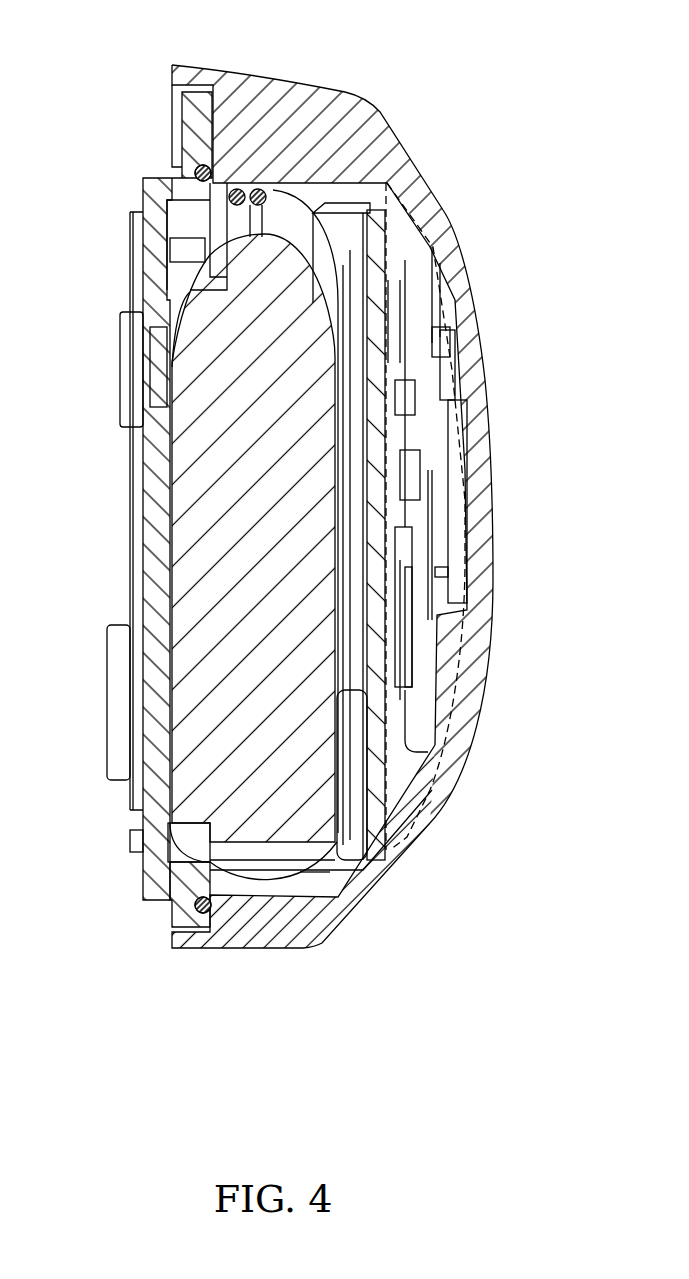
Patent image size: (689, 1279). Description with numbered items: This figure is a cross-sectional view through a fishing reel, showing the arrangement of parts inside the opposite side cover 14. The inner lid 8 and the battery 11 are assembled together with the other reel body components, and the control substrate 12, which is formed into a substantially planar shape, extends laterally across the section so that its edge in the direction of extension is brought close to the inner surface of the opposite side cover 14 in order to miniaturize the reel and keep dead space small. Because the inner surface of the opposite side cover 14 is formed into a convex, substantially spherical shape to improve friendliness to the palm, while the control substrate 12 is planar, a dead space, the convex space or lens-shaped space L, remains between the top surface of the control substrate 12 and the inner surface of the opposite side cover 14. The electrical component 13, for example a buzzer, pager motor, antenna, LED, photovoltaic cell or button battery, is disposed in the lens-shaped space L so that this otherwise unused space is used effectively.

The inner lid 8 is at (170, 887).
The battery 11 is at (283, 273).
The control substrate 12 is at (380, 825).
The electrical component 13 is at (405, 488).
The opposite side cover 14 is at (270, 913).
The convex space or lens-shaped space L is at (420, 210).